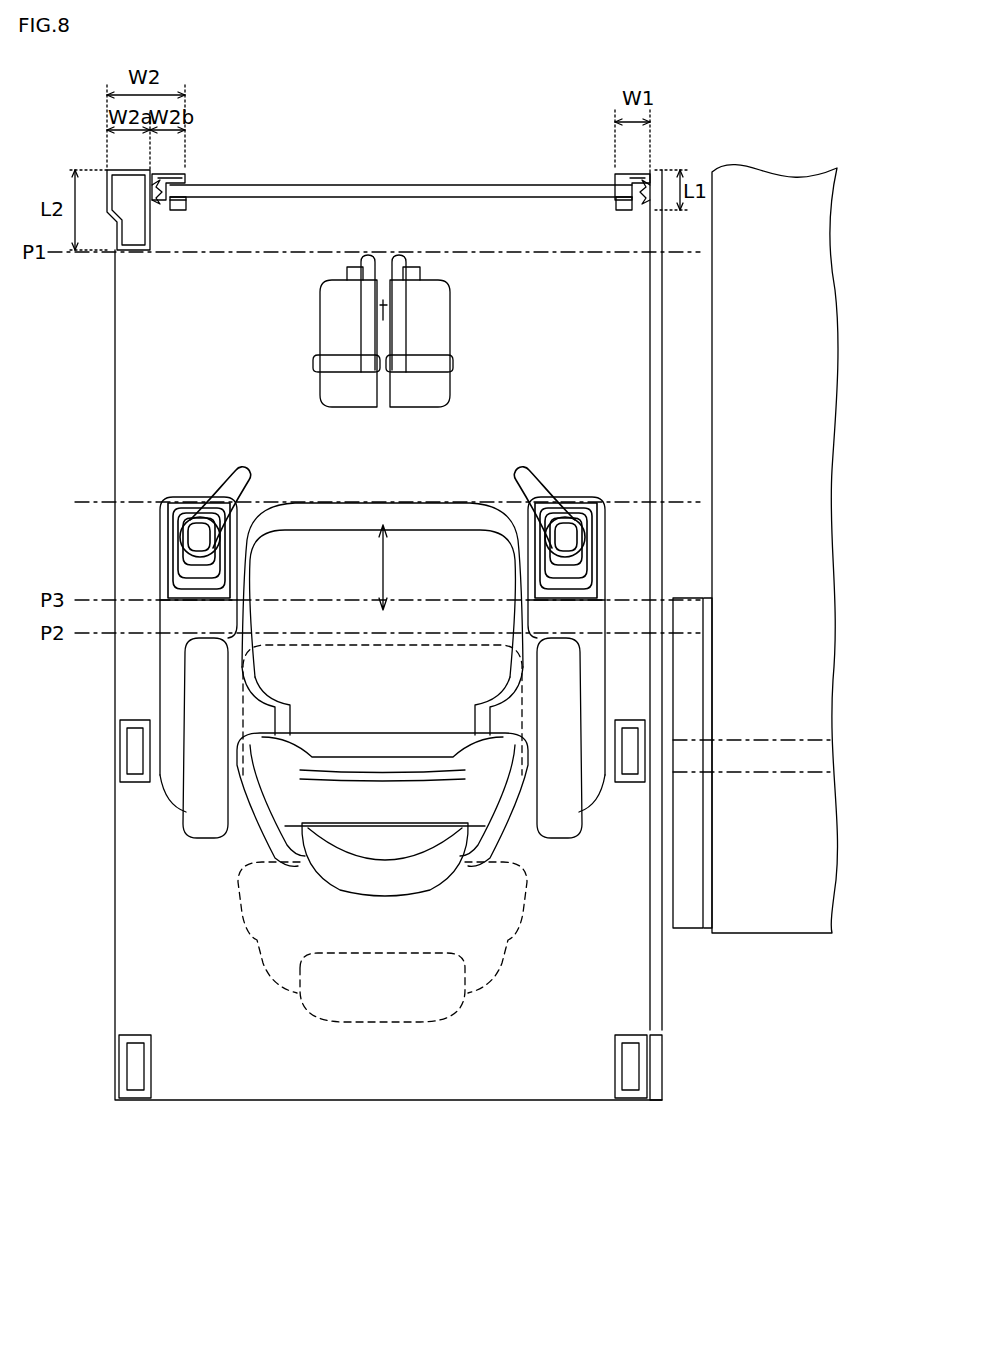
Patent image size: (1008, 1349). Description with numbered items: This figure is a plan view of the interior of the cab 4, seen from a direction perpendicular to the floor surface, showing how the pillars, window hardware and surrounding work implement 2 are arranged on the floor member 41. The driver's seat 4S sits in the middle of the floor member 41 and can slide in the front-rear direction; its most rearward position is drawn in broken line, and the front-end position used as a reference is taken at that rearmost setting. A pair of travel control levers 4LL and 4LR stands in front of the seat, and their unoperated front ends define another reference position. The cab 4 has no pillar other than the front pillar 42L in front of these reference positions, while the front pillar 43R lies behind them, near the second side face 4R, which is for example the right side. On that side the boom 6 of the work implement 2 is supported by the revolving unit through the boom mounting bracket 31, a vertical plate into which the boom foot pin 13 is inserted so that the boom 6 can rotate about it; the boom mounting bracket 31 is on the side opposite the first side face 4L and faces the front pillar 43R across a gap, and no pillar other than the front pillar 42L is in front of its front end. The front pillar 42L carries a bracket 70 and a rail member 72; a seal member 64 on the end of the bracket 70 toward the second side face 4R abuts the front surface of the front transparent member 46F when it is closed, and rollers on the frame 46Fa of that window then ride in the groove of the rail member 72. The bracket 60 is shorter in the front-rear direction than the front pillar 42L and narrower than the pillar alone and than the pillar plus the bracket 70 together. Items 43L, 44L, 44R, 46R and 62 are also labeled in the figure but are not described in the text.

The work implement 2 is at (820, 154).
The cab 4 is at (332, 1127).
The first side face 4L is at (115, 400).
The second side face 4R is at (665, 378).
The driver's seat 4S is at (298, 793).
The travel control lever 4LL is at (340, 363).
The travel control lever 4LR is at (427, 363).
The boom 6 is at (774, 190).
The boom foot pin 13 is at (800, 772).
The boom mounting bracket 31 is at (690, 688).
The floor member 41 is at (155, 358).
The front pillar 42L is at (110, 185).
The left front mount 43L is at (122, 750).
The front pillar 43R is at (630, 784).
The left rear mount 44L is at (120, 1078).
The right rear mount 44R is at (640, 1074).
The front transparent member 46F is at (385, 185).
The frame 46Fa is at (180, 205).
The right frame member 46R is at (655, 302).
The bracket 60 is at (640, 175).
The rail portion 62 is at (660, 243).
The seal member 64 is at (176, 181).
The bracket 70 is at (165, 176).
The rail member 72 is at (166, 208).